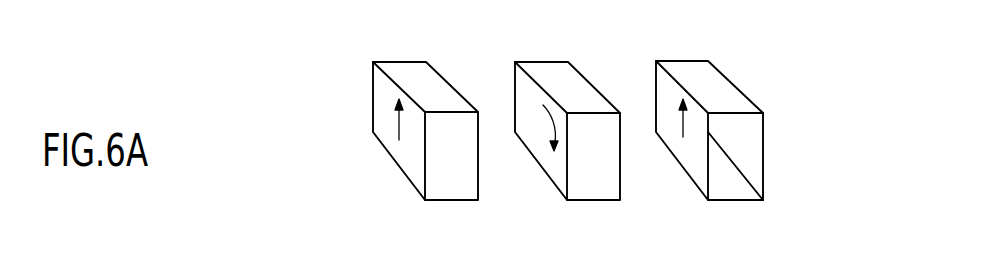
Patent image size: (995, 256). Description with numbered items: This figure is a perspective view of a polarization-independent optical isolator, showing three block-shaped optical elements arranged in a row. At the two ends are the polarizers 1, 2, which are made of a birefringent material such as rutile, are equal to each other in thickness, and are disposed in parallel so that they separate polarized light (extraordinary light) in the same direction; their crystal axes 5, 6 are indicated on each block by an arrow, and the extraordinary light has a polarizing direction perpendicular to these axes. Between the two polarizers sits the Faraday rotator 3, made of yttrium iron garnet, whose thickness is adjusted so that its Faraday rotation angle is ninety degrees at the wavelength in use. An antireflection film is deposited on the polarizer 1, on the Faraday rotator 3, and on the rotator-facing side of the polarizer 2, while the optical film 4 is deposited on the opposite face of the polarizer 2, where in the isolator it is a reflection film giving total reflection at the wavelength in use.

The polarizer 1 is at (417, 72).
The polarizer 2 is at (676, 67).
The Faraday rotator 3 is at (567, 73).
The optical film 4 is at (763, 142).
The crystal axis 5 is at (399, 127).
The crystal axis 6 is at (683, 125).